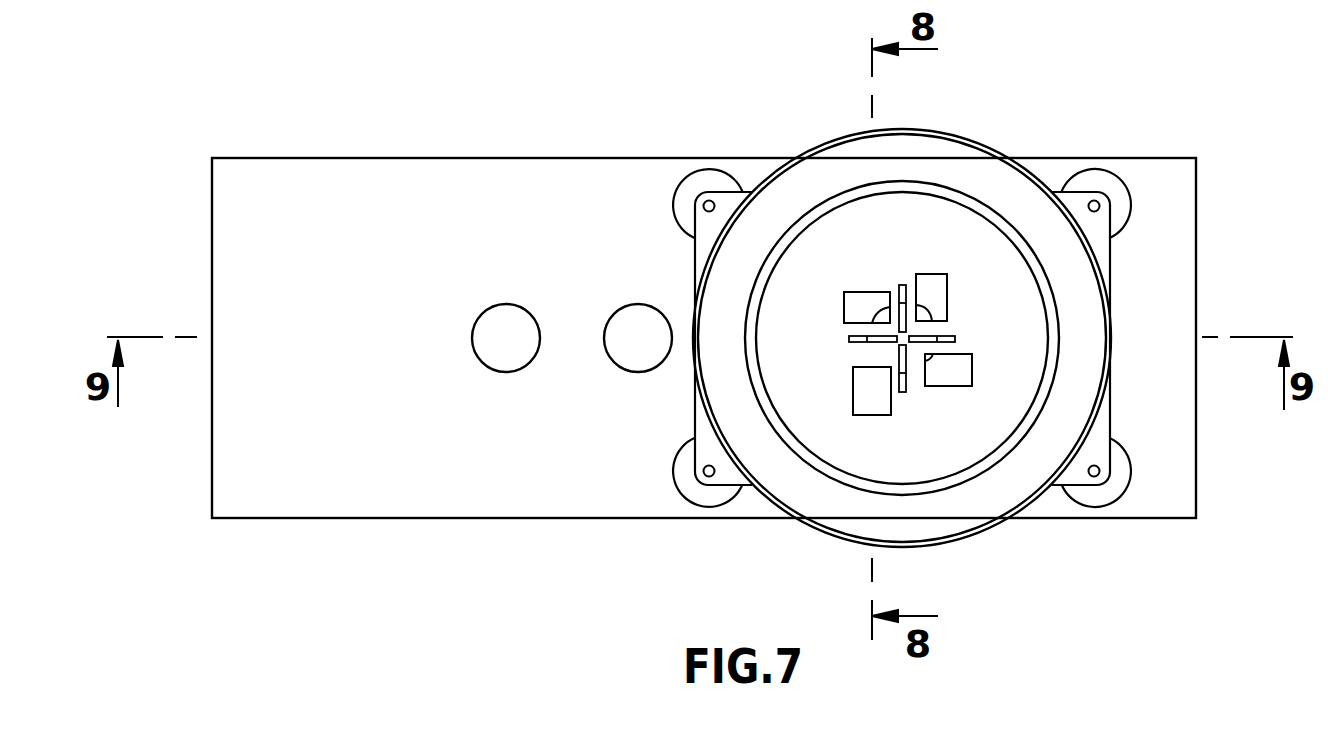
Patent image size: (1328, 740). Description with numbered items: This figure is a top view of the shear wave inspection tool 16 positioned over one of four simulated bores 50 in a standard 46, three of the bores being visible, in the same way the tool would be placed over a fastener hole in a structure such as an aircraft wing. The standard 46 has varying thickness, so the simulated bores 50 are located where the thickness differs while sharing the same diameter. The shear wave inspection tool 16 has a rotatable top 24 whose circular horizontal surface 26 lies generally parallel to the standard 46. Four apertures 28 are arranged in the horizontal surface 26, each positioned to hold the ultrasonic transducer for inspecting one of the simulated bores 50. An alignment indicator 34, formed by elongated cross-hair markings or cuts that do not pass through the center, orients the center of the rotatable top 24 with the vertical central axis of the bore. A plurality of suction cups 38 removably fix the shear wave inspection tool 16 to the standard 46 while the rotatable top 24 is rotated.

The shear wave inspection tool 16 is at (1112, 317).
The rotatable top 24 is at (1003, 197).
The horizontal surface 26 is at (967, 441).
The apertures 28 is at (962, 367).
The alignment indicator 34 is at (863, 342).
The suction cups 38 is at (685, 470).
The standard 46 is at (277, 202).
The simulated bores 50 is at (638, 332).